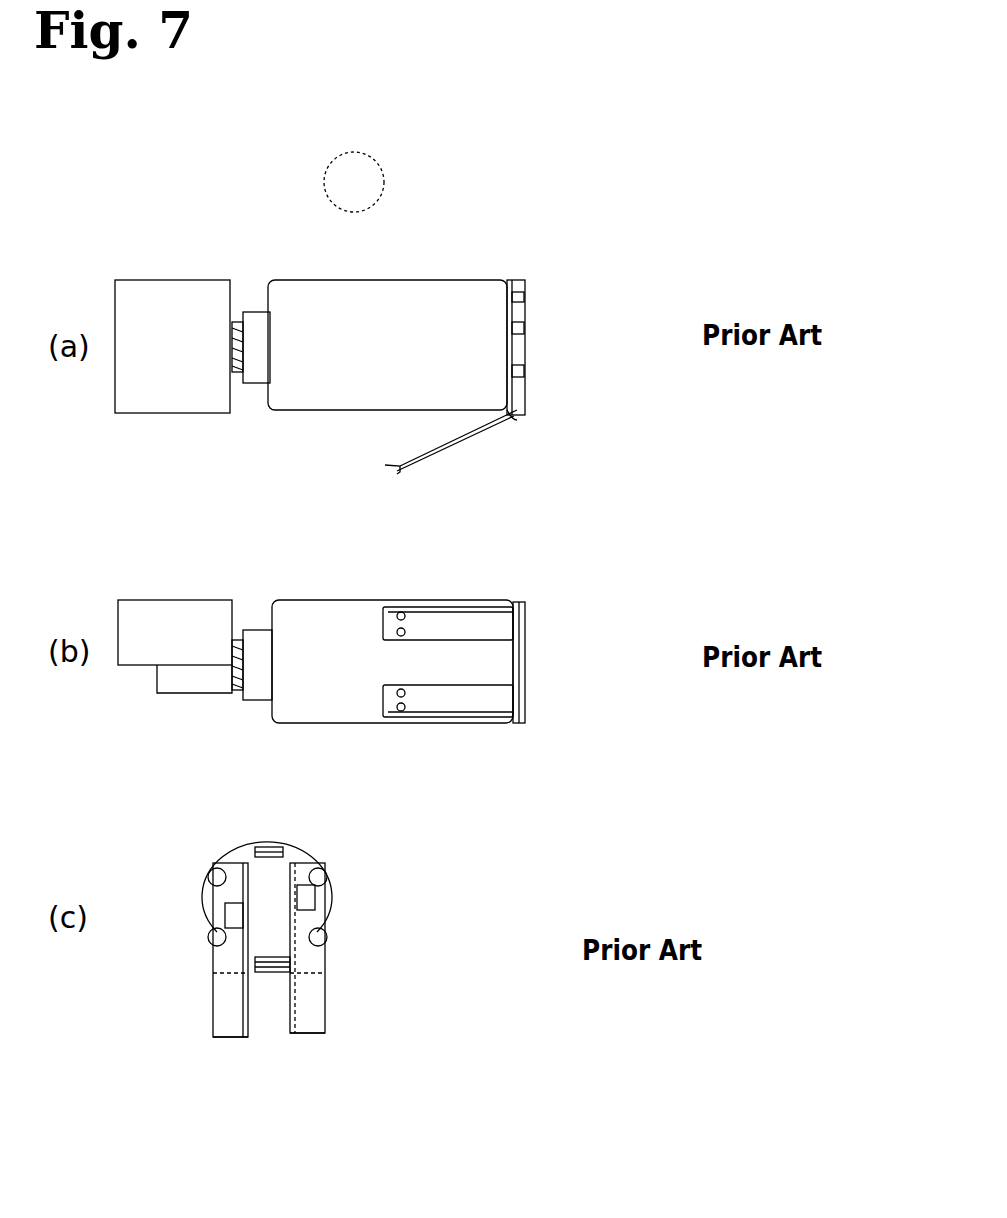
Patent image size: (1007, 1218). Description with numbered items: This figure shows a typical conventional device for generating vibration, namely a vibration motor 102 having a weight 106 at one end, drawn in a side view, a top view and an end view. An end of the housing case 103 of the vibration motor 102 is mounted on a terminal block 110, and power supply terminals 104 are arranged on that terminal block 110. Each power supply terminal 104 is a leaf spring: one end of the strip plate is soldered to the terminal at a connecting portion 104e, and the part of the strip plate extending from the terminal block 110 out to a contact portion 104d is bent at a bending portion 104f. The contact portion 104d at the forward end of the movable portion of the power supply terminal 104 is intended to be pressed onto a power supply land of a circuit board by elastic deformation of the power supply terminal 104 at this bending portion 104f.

The vibration motor 102 is at (332, 244).
The housing case 103 is at (420, 294).
The power supply terminal 104 is at (463, 449).
The contact portion 104d is at (402, 477).
The connecting portion 104e is at (522, 335).
The bending portion 104f is at (518, 421).
The weight 106 is at (162, 280).
The terminal block 110 is at (527, 277).